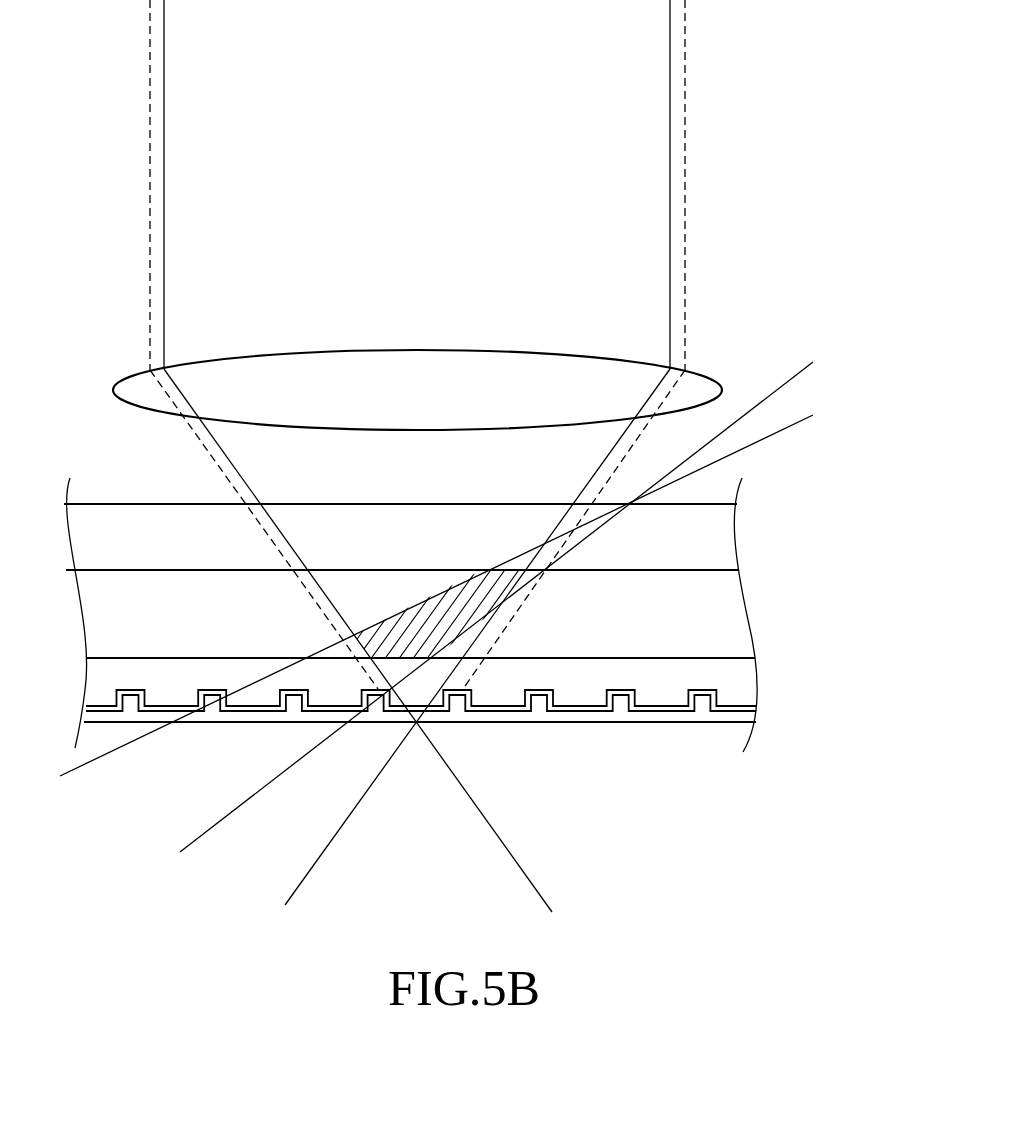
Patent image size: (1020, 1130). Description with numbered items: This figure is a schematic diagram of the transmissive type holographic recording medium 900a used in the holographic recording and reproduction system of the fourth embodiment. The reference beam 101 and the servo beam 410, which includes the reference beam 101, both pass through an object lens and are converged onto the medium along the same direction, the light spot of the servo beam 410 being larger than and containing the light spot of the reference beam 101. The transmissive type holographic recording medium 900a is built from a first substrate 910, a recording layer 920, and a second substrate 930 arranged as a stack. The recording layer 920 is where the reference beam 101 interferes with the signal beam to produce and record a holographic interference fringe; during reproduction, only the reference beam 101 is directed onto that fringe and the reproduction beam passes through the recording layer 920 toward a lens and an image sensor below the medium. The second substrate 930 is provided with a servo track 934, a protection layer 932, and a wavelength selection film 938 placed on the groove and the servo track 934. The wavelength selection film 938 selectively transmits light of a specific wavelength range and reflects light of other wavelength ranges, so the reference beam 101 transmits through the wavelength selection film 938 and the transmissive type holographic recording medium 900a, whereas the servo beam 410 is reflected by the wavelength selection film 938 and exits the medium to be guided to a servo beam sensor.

The reference beam 101 is at (650, 155).
The servo beam 410 is at (680, 248).
The transmissive type holographic recording medium 900a is at (775, 718).
The first substrate 910 is at (697, 543).
The recording layer 920 is at (712, 612).
The second substrate 930 is at (728, 680).
The protection layer 932 is at (582, 718).
The servo track 934 is at (618, 695).
The wavelength selection film 938 is at (668, 710).